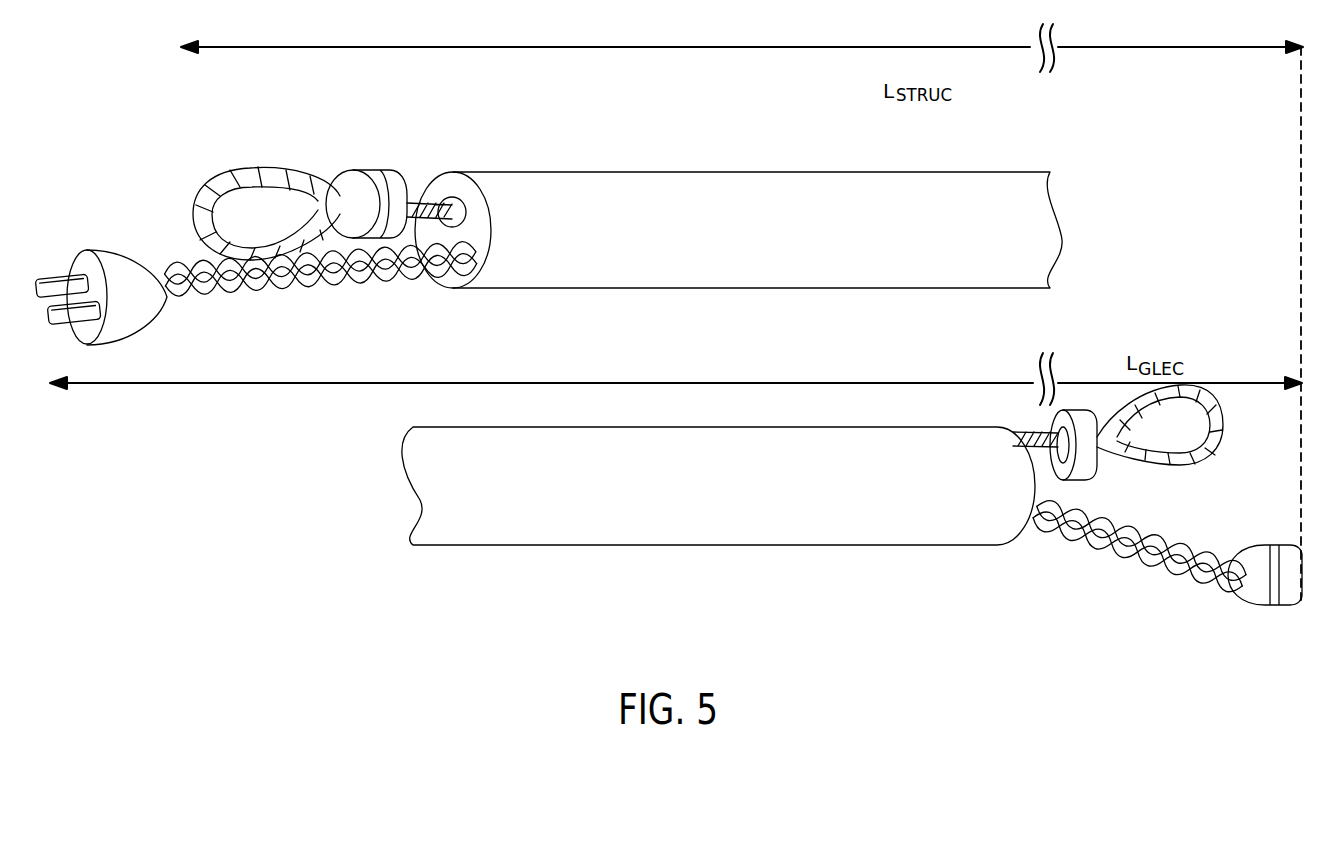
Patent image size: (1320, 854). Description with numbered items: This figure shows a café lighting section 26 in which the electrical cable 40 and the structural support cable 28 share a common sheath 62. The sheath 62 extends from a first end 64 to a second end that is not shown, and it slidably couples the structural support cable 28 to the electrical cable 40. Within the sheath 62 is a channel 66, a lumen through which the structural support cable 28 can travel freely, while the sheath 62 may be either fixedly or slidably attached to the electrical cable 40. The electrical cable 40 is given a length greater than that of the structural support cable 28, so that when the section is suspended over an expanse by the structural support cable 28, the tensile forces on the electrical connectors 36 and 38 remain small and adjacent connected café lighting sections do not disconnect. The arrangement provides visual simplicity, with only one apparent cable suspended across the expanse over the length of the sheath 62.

The café lighting section 26 is at (968, 566).
The structural support cable 28 is at (257, 167).
The electrical connector 36 is at (97, 247).
The electrical connector 38 is at (1278, 624).
The electrical cable 40 is at (352, 292).
The sheath 62 is at (717, 183).
The first end 64 is at (448, 164).
The channel 66 is at (436, 201).